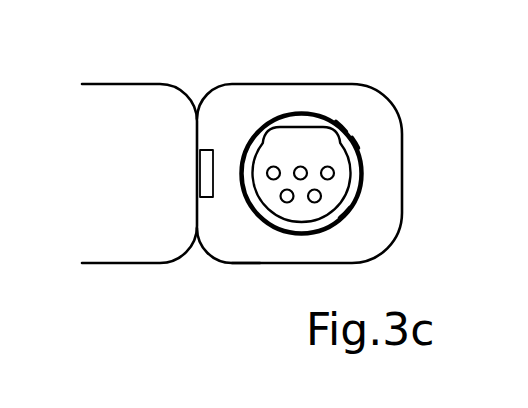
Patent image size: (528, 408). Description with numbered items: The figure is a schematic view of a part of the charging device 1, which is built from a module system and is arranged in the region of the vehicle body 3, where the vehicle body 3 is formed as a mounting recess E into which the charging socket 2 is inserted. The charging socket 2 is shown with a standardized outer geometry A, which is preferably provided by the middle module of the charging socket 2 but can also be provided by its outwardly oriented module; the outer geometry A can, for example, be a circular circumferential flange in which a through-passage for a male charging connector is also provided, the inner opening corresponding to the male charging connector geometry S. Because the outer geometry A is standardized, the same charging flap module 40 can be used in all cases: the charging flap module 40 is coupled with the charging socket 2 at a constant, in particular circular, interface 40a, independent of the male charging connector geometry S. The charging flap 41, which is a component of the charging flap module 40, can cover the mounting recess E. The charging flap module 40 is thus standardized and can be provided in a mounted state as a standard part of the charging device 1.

The charging device 1 is at (98, 54).
The charging flap 41 is at (146, 105).
The charging socket 2 is at (307, 99).
The vehicle body 3 is at (402, 162).
The charging flap module 40 is at (274, 250).
The interface 40a is at (357, 206).
The male charging connector geometry S is at (348, 126).
The outer geometry A is at (371, 136).
The mounting recess E is at (234, 250).